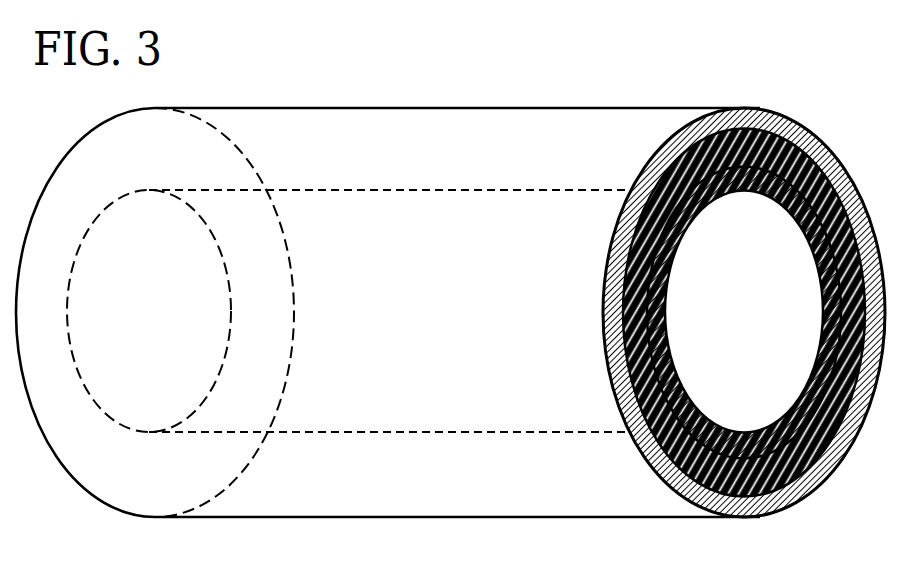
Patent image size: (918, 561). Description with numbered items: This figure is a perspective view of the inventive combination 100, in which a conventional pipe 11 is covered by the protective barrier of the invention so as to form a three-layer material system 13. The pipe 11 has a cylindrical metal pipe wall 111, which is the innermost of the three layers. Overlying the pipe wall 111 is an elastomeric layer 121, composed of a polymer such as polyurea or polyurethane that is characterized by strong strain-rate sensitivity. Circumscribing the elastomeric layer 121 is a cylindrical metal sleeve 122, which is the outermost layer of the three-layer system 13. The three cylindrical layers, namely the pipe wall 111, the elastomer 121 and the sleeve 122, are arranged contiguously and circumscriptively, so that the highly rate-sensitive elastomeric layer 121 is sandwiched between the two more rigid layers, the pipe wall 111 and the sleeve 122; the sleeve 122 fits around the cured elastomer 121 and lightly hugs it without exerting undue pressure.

The tubular member assembly 100 is at (450, 275).
The three-layer material system 13 is at (450, 275).
The cylindrical metal sleeve 122 is at (600, 290).
The elastomeric layer 121 is at (640, 398).
The pipe 11 is at (744, 312).
The cylindrical metal pipe wall 111 is at (818, 346).